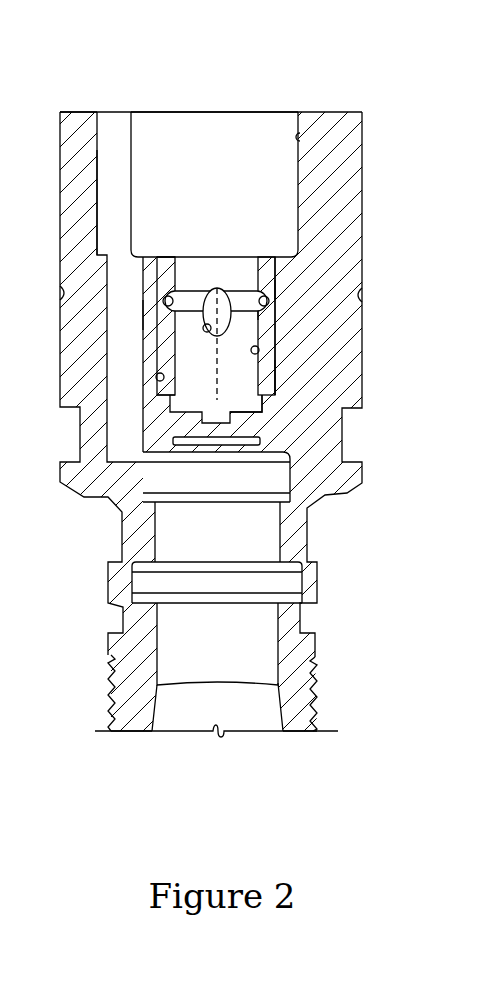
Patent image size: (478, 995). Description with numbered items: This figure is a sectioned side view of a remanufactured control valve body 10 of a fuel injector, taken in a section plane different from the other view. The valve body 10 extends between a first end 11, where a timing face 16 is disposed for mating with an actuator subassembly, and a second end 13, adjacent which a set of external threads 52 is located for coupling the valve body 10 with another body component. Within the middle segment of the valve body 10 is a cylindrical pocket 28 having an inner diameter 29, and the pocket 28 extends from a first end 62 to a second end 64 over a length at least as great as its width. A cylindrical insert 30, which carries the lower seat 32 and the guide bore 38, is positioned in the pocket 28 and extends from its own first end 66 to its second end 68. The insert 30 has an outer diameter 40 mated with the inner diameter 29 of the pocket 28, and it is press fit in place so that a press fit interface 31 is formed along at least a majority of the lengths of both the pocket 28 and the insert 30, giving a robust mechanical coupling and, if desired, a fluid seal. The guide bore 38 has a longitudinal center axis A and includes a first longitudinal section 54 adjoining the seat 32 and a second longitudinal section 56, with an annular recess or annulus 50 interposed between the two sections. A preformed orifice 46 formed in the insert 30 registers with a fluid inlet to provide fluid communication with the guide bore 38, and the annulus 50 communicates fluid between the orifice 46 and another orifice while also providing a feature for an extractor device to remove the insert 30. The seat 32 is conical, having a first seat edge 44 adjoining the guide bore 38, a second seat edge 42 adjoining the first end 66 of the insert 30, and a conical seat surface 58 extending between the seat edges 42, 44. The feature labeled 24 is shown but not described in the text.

The valve body 10 is at (362, 190).
The first end 11 is at (308, 111).
The second end 13 is at (122, 741).
The timing face 16 is at (88, 112).
The vent opening 24 is at (302, 137).
The cylindrical pocket 28 is at (215, 428).
The inner diameter 29 is at (163, 375).
The insert 30 is at (272, 308).
The press fit interface 31 is at (276, 292).
The lower seat 32 is at (249, 255).
The guide bore 38 is at (260, 354).
The outer diameter 40 is at (283, 377).
The second seat edge 42 is at (263, 257).
The first seat edge 44 is at (185, 257).
The orifice 46 is at (206, 333).
The annulus 50 is at (152, 315).
The external threads 52 is at (323, 697).
The first longitudinal section 54 is at (249, 278).
The second longitudinal section 56 is at (250, 368).
The conical seat surface 58 is at (165, 257).
The first end 62 is at (283, 282).
The second end 64 is at (290, 410).
The first end 66 is at (149, 253).
The second end 68 is at (162, 400).
The longitudinal center axis A is at (197, 350).